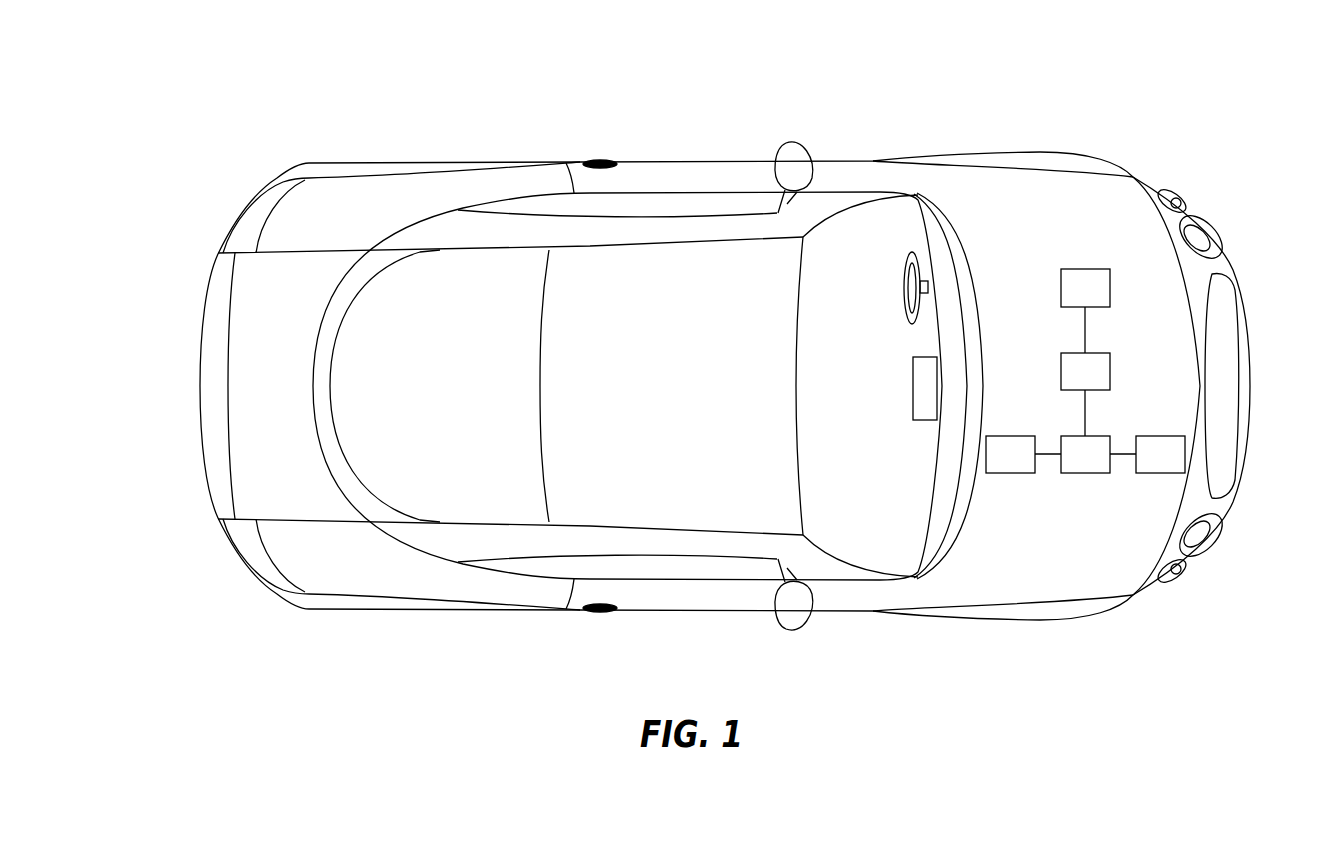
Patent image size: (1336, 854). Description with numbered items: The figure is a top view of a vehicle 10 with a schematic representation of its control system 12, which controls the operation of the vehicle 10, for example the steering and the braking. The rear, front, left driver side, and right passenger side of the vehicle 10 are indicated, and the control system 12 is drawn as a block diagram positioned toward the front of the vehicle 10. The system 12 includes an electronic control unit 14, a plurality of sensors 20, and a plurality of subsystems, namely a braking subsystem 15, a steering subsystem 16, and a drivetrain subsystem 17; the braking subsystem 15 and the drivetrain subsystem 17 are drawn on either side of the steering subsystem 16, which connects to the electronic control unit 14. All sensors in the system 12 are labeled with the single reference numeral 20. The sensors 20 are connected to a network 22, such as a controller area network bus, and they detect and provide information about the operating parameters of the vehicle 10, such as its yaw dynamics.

The vehicle 10 is at (330, 103).
The control system 12 is at (1040, 255).
The electronic control unit 14 is at (1098, 385).
The braking subsystem 15 is at (1173, 468).
The steering subsystem 16 is at (1098, 468).
The drivetrain subsystem 17 is at (1023, 468).
The sensors 20 is at (1098, 301).
The network 22 is at (1087, 330).